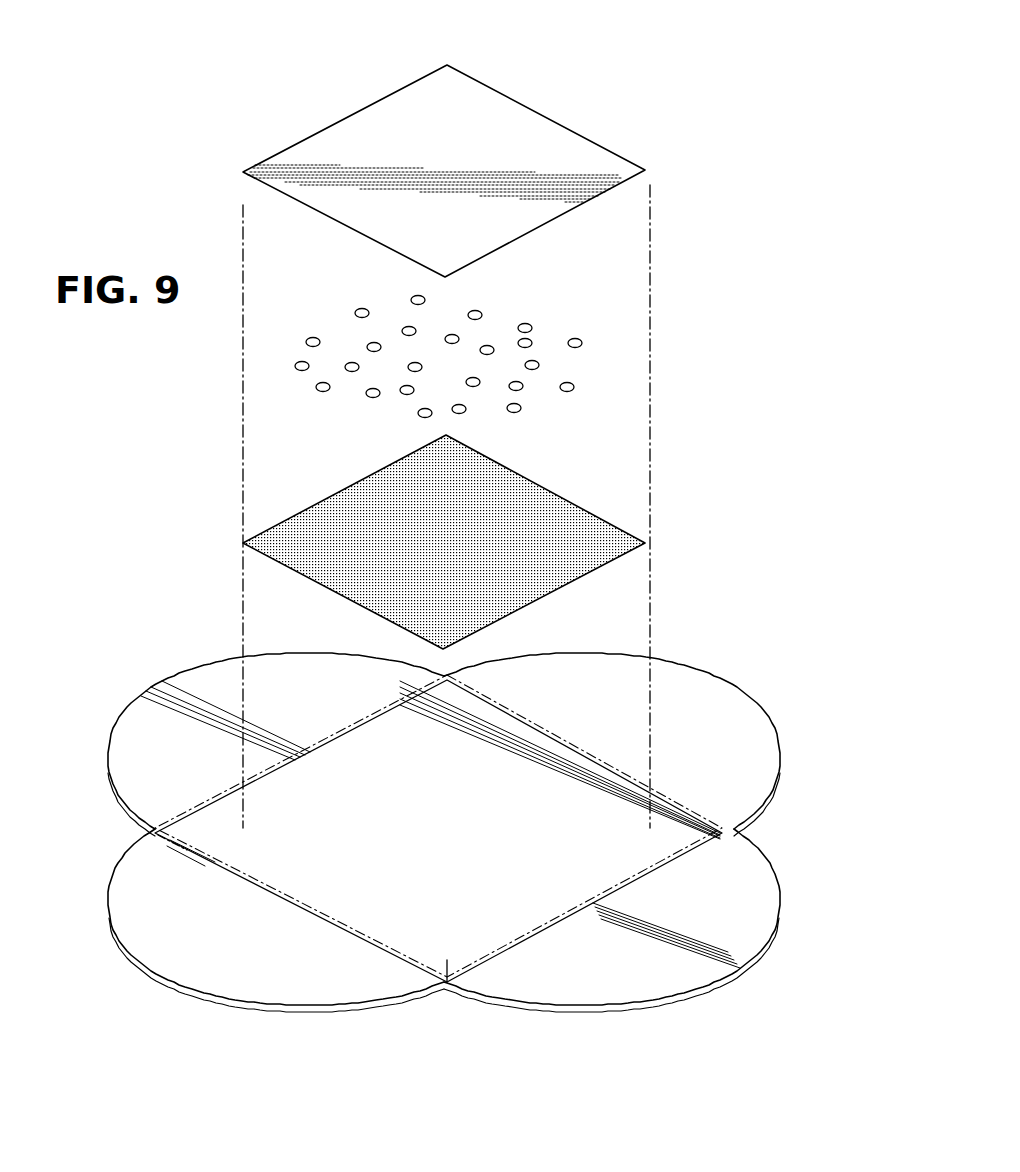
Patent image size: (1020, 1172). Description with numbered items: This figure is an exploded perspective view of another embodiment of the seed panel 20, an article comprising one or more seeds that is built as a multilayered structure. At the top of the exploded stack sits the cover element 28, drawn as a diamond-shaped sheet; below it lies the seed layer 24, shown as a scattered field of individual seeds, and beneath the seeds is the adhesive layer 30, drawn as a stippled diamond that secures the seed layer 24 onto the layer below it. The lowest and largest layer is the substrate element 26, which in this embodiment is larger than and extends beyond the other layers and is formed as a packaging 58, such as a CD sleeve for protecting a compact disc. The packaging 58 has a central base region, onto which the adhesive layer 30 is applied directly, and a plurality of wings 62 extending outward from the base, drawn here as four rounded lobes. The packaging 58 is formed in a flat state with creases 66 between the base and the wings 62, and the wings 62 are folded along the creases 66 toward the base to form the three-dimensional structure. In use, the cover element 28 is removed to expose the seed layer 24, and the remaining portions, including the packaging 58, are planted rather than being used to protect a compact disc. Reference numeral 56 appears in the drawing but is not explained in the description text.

The seed panel 20 is at (552, 90).
The cover element 28 is at (475, 103).
The seed layer 24 is at (476, 311).
The adhesive layer 30 is at (368, 517).
The base 56 is at (119, 724).
The wings 62 is at (228, 680).
The substrate element 26 is at (687, 840).
The creases 66 is at (178, 822).
The packaging 58 is at (487, 927).